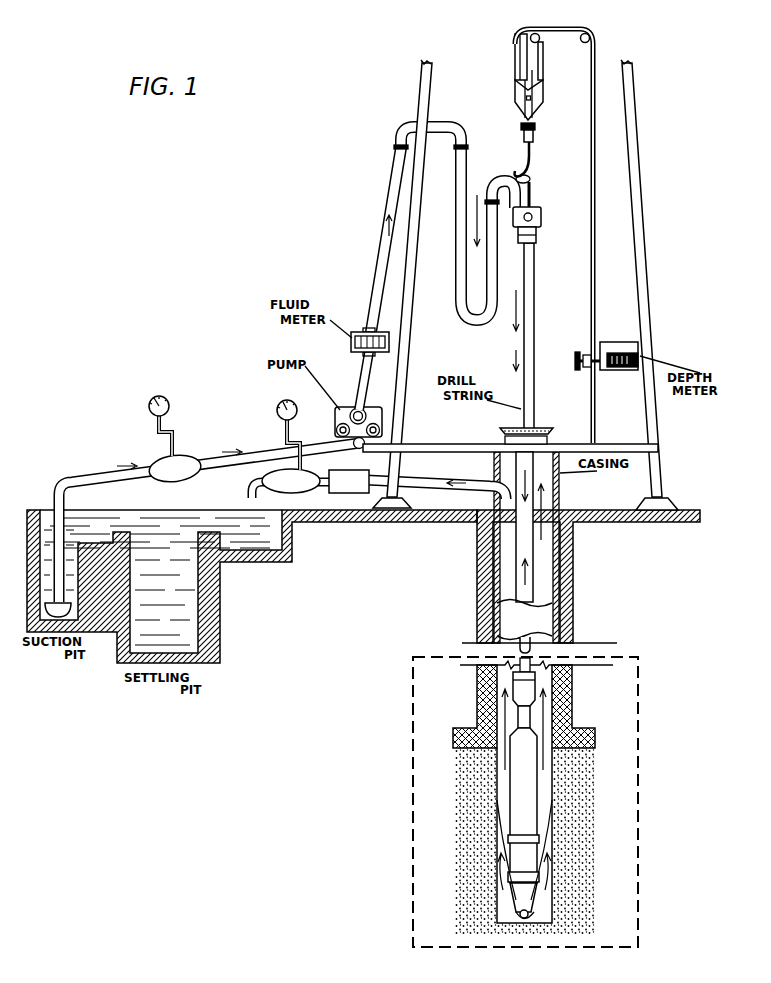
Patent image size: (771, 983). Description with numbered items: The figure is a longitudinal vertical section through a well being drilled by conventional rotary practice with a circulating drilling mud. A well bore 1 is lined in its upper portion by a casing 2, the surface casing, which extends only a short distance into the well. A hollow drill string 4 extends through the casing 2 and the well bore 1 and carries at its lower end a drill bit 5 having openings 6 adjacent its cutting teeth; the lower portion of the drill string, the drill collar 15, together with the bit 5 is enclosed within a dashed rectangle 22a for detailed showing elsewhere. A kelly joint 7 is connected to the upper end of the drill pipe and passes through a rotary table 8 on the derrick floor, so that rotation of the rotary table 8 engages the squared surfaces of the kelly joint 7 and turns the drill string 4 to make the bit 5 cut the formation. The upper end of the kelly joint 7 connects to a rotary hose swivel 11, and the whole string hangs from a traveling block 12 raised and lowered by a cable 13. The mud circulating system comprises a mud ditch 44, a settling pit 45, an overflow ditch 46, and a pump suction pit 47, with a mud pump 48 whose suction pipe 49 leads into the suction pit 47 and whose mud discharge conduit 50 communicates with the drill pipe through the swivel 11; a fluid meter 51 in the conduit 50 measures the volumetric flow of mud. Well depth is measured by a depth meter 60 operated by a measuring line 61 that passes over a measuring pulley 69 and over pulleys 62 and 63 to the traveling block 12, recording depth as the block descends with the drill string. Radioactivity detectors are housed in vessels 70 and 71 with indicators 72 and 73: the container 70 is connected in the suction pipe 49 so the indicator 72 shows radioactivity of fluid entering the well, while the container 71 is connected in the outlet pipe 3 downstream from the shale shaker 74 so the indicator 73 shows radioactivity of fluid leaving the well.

The well bore 1 is at (503, 716).
The casing 2 is at (560, 508).
The outlet pipe 3 is at (253, 487).
The drill string 4 is at (534, 494).
The drill bit 5 is at (540, 910).
The openings 6 is at (520, 915).
The kelly joint 7 is at (535, 270).
The rotary table 8 is at (500, 432).
The rotary hose swivel 11 is at (541, 222).
The traveling block 12 is at (521, 98).
The cable 13 is at (514, 59).
The drill collar 15 is at (535, 689).
The dashed rectangle 22a is at (413, 821).
The mud ditch 44 is at (268, 538).
The settling pit 45 is at (180, 620).
The overflow ditch 46 is at (117, 518).
The pump suction pit 47 is at (68, 570).
The mud pump 48 is at (337, 412).
The suction pipe 49 is at (92, 478).
The mud discharge conduit 50 is at (397, 175).
The fluid meter 51 is at (352, 343).
The depth meter 60 is at (615, 345).
The measuring line 61 is at (596, 134).
The pulley 62 is at (590, 36).
The pulley 63 is at (531, 36).
The measuring pulley 69 is at (594, 350).
The vessel (container) 70 is at (160, 458).
The vessel (container) 71 is at (290, 474).
The indicator 72 is at (149, 405).
The indicator 73 is at (277, 407).
The shale shaker 74 is at (345, 486).